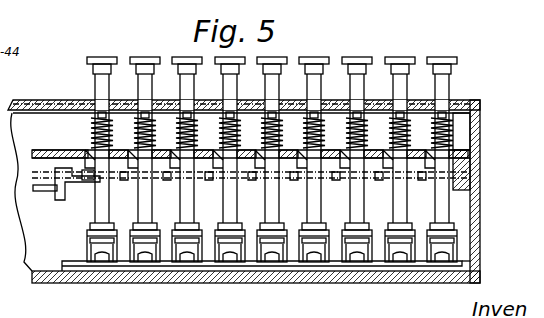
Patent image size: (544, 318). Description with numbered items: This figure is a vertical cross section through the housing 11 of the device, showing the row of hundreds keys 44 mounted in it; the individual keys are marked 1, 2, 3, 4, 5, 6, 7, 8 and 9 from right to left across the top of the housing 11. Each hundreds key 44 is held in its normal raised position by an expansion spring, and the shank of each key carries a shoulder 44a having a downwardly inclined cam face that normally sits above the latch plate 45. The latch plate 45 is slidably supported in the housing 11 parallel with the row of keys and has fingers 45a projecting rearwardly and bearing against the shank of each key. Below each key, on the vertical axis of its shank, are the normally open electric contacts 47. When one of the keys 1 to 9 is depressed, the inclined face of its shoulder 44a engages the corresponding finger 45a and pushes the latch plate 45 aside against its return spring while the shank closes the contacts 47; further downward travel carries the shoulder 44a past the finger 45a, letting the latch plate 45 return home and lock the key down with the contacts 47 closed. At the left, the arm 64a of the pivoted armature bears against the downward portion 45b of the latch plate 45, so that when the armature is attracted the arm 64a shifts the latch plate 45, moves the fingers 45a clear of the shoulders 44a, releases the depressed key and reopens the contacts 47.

The key 1 is at (442, 134).
The key 2 is at (400, 134).
The key 3 is at (357, 134).
The key 4 is at (314, 134).
The key 5 is at (272, 134).
The key 6 is at (230, 134).
The key 7 is at (187, 134).
The key 8 is at (145, 134).
The key 9 is at (102, 134).
The housing 11 is at (52, 100).
The hundreds keys 44 is at (393, 58).
The shoulders 44a is at (89, 148).
The latch plate 45 is at (248, 174).
The fingers 45a is at (368, 184).
The downward portion of latch plate 45b is at (75, 216).
The electric contacts 47 is at (110, 237).
The arm of armature 64a is at (43, 193).